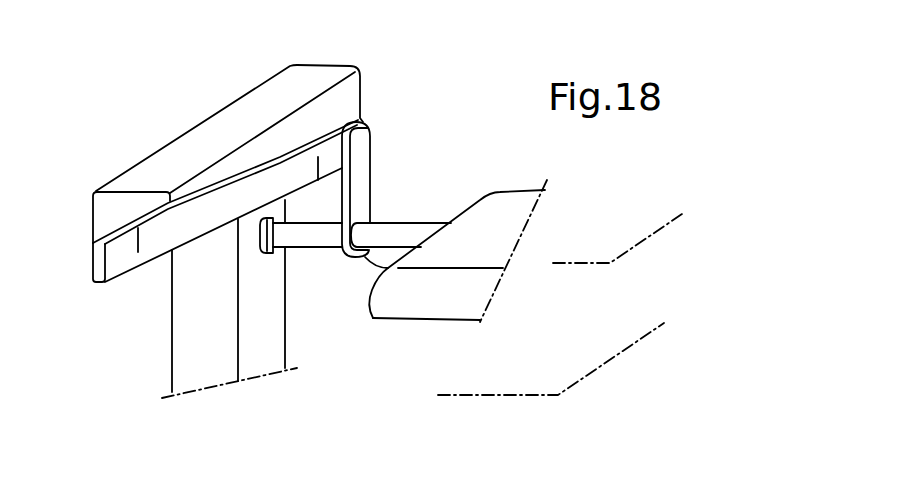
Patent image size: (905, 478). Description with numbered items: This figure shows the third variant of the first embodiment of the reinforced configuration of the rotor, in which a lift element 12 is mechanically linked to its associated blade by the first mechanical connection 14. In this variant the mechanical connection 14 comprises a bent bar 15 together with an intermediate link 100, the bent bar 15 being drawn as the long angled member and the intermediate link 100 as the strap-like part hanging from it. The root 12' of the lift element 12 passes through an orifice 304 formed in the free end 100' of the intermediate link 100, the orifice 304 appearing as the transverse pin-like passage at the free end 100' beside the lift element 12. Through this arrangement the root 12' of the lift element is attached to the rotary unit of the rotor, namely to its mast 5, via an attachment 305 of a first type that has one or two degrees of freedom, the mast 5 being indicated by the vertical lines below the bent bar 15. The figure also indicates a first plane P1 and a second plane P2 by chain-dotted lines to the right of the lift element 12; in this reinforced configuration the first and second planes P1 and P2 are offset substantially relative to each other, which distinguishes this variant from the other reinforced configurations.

The bent bar 15 is at (205, 187).
The attachment of a first type 305 is at (302, 208).
The first mechanical connection 14 is at (145, 267).
The intermediate link 100 is at (382, 185).
The orifice 304 is at (327, 248).
The root of the lift element 12' is at (459, 206).
The first lift element 12 is at (539, 251).
The free end of the intermediate link 100' is at (360, 308).
The mast 5 is at (256, 369).
The first plane P1 is at (683, 213).
The second plane P2 is at (665, 324).